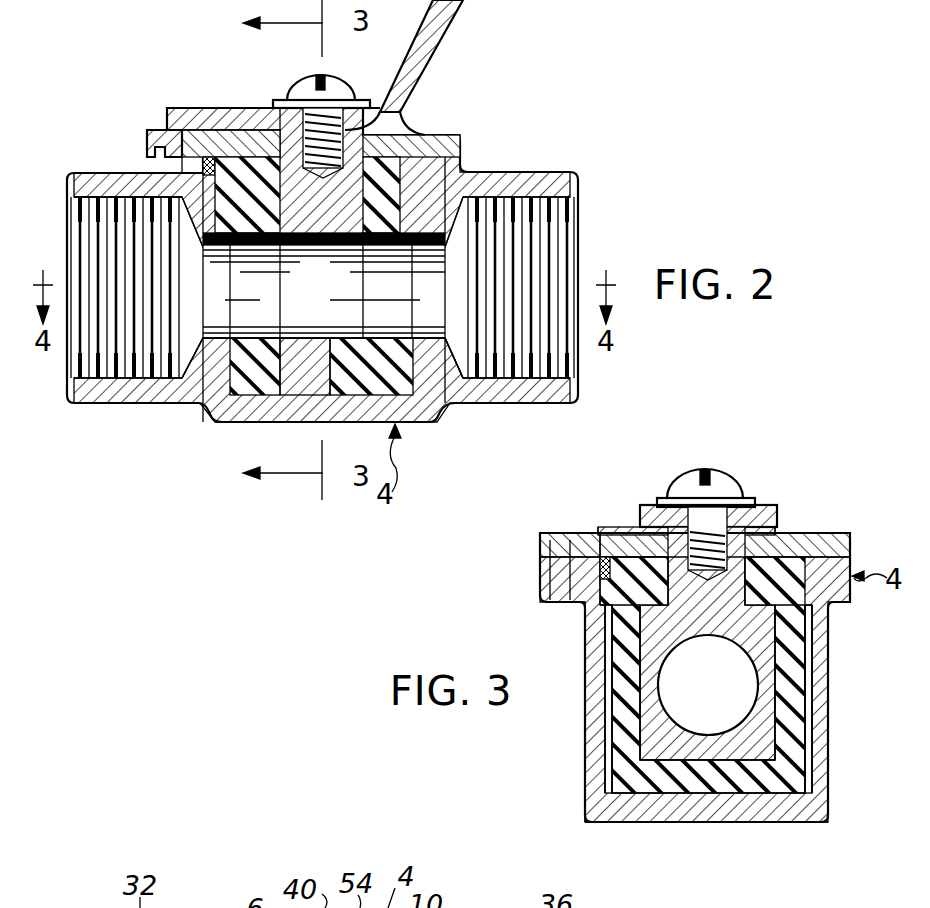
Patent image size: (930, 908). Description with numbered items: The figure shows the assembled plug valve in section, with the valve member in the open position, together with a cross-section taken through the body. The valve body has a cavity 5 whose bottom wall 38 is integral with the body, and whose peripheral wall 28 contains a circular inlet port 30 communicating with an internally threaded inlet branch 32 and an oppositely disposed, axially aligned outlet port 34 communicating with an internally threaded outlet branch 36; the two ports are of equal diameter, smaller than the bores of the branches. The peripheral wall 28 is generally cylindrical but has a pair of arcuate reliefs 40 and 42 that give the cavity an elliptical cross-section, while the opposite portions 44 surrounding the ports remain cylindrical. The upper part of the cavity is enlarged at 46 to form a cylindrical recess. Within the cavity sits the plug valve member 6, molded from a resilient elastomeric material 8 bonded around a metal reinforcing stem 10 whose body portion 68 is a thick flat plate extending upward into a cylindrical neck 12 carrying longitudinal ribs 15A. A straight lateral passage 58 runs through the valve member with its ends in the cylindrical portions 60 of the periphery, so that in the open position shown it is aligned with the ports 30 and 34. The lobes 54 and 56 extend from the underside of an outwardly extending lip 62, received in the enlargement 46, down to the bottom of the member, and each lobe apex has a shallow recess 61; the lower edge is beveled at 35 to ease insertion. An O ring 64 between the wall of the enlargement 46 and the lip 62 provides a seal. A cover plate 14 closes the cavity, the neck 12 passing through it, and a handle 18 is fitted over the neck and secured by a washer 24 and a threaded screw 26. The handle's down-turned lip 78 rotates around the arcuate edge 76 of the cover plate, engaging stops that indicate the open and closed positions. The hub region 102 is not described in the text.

In FIG. 2, the cavity 5 is at (458, 230).
In FIG. 2, the plug valve member 6 is at (418, 136).
In FIG. 3, the plug valve member 6 is at (620, 777).
In FIG. 2, the elastomeric material 8 is at (406, 104).
In FIG. 2, the metal reinforcing stem 10 is at (262, 328).
In FIG. 3, the metal reinforcing stem 10 is at (695, 624).
In FIG. 3, the cylindrical neck 12 is at (790, 531).
In FIG. 2, the cover plate 14 is at (206, 136).
In FIG. 3, the cover plate 14 is at (808, 538).
In FIG. 3, the ribs 15A is at (851, 540).
In FIG. 2, the handle 18 is at (226, 110).
In FIG. 3, the handle 18 is at (770, 508).
In FIG. 2, the washer 24 is at (284, 100).
In FIG. 3, the washer 24 is at (746, 500).
In FIG. 2, the threaded screw 26 is at (330, 90).
In FIG. 3, the threaded screw 26 is at (728, 482).
In FIG. 3, the peripheral wall 28 is at (614, 622).
In FIG. 2, the inlet port 30 is at (217, 330).
In FIG. 2, the inlet branch 32 is at (131, 400).
In FIG. 2, the outlet port 34 is at (428, 322).
In FIG. 2, the bevel 35 is at (210, 412).
In FIG. 3, the bevel 35 is at (806, 792).
In FIG. 2, the outlet branch 36 is at (562, 174).
In FIG. 2, the bottom wall 38 is at (300, 402).
In FIG. 3, the bottom wall 38 is at (680, 812).
In FIG. 3, the arcuate relief 40 is at (802, 714).
In FIG. 3, the arcuate relief 42 is at (610, 692).
In FIG. 2, the cylindrical cavity wall portions 44 is at (70, 205).
In FIG. 2, the enlargement 46 is at (204, 166).
In FIG. 3, the enlargement 46 is at (598, 579).
In FIG. 3, the lobe 54 is at (813, 764).
In FIG. 3, the lobe 56 is at (614, 748).
In FIG. 2, the lateral passage 58 is at (302, 301).
In FIG. 3, the lateral passage 58 is at (718, 720).
In FIG. 2, the cylindrical portions 60 is at (70, 237).
In FIG. 3, the shallow recess 61 is at (614, 668).
In FIG. 2, the lip 62 is at (452, 160).
In FIG. 3, the lip 62 is at (602, 548).
In FIG. 3, the O ring 64 is at (597, 562).
In FIG. 3, the body portion 68 is at (777, 752).
In FIG. 2, the arcuate edge 76 is at (166, 142).
In FIG. 2, the down-turned lip 78 is at (148, 146).
In FIG. 2, the handle hub 102 is at (430, 132).